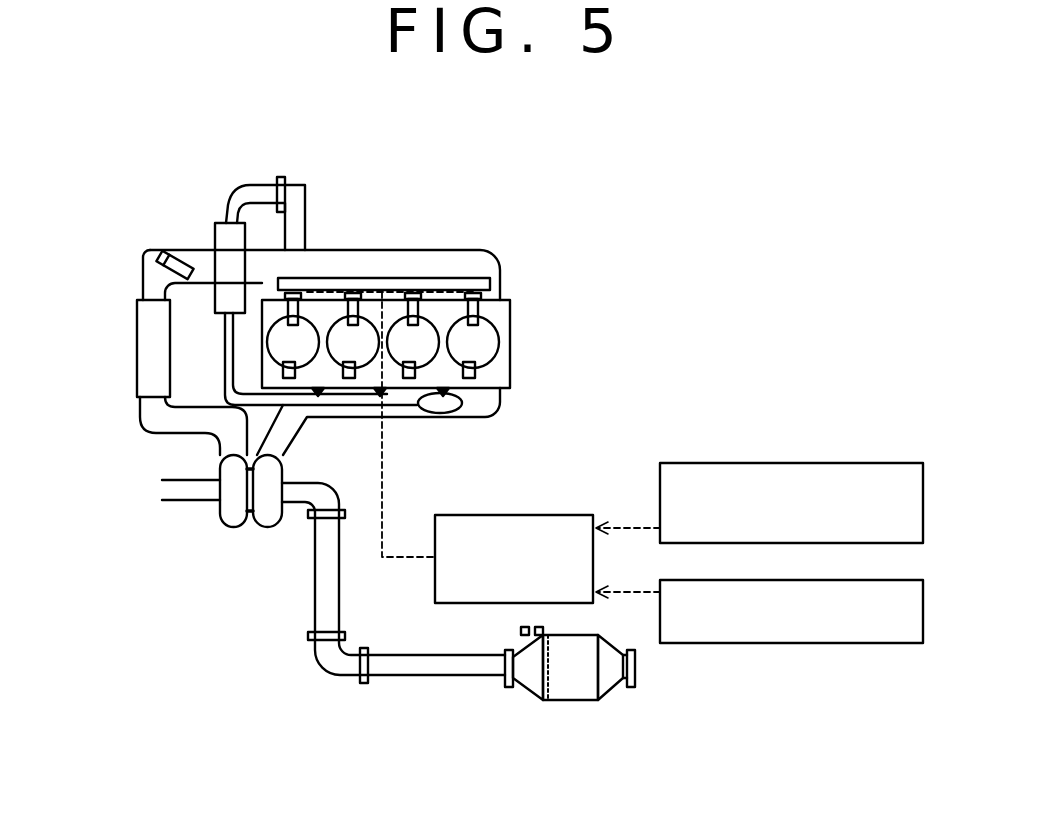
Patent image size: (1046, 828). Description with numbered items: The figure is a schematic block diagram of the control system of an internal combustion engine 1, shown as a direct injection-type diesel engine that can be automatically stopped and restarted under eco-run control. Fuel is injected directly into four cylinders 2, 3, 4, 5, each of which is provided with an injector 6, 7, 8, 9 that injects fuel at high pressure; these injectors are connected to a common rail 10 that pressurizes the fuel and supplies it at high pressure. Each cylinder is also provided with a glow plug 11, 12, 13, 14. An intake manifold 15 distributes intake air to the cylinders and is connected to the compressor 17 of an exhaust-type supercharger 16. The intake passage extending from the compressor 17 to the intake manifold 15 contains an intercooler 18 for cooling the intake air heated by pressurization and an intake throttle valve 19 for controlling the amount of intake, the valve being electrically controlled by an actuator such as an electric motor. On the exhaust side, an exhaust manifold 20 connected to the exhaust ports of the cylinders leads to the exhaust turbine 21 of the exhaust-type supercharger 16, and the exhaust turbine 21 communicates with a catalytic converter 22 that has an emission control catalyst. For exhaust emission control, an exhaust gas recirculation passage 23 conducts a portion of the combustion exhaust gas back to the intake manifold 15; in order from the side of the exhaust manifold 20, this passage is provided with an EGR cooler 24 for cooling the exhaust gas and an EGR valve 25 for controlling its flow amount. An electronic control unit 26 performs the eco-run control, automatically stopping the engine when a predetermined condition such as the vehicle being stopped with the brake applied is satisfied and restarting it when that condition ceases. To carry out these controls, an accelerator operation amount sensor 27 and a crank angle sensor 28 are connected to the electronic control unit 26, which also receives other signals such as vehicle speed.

The internal combustion engine 1 is at (545, 221).
The cylinder 2 is at (263, 340).
The cylinder 3 is at (366, 384).
The cylinder 4 is at (445, 392).
The cylinder 5 is at (490, 323).
The injector 6 is at (300, 293).
The injector 7 is at (355, 293).
The injector 8 is at (420, 305).
The injector 9 is at (485, 303).
The common rail 10 is at (397, 278).
The glow plug 11 is at (288, 368).
The glow plug 12 is at (332, 417).
The glow plug 13 is at (406, 378).
The glow plug 14 is at (480, 373).
The intake manifold 15 is at (382, 250).
The exhaust-type supercharger 16 is at (227, 540).
The compressor 17 is at (232, 513).
The intercooler 18 is at (148, 352).
The intake throttle valve 19 is at (158, 255).
The exhaust manifold 20 is at (497, 405).
The exhaust turbine 21 is at (267, 518).
The catalytic converter 22 is at (568, 685).
The exhaust gas recirculation passage 23 is at (225, 372).
The EGR cooler 24 is at (227, 240).
The EGR valve 25 is at (280, 180).
The electronic control unit 26 is at (520, 512).
The accelerator operation amount sensor 27 is at (832, 463).
The crank angle sensor 28 is at (830, 643).